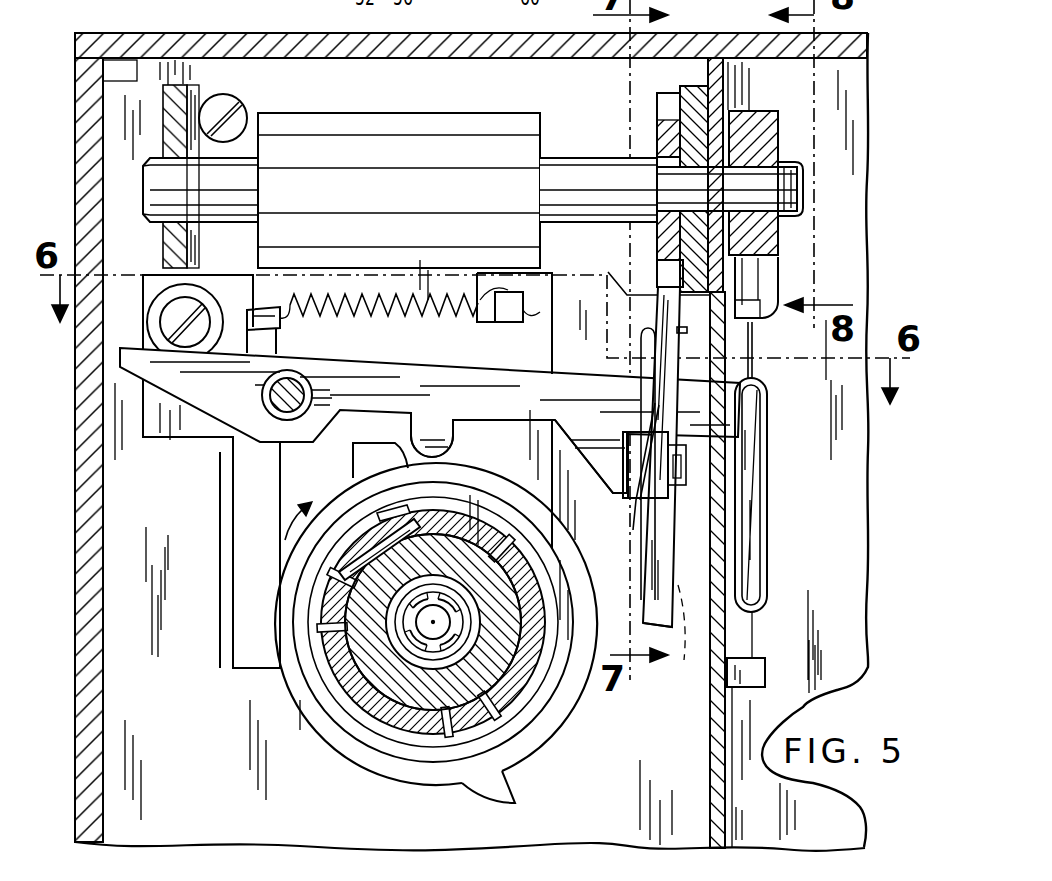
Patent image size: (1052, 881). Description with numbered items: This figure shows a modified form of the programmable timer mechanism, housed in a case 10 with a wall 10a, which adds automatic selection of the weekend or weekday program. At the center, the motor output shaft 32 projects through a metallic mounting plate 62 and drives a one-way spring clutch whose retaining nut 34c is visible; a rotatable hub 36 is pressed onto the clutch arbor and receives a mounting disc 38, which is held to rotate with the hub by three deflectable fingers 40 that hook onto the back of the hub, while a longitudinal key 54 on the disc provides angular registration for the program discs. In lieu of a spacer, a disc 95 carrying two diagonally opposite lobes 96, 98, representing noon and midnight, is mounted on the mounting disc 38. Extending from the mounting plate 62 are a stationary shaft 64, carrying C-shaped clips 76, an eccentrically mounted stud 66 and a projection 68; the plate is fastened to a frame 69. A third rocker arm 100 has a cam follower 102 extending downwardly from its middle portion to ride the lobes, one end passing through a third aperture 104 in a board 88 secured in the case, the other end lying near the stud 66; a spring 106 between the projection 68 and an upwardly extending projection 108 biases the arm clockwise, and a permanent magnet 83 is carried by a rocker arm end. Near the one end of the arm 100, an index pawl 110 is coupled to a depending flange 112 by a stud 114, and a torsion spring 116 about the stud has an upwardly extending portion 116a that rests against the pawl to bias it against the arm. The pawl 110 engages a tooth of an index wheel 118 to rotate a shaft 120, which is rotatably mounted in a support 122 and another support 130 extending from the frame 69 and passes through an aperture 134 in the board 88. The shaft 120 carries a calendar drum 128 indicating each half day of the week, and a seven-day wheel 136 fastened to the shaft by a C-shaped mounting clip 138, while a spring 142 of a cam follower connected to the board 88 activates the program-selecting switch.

The case 10 is at (113, 100).
The housing top wall 10a is at (232, 48).
The output shaft 32 is at (433, 615).
The retaining nut 34c is at (433, 656).
The hub 36 is at (375, 655).
The mounting disc 38 is at (505, 693).
The deflectable fingers 40 is at (338, 606).
The key 54 is at (405, 511).
The mounting plate 62 is at (243, 535).
The stationary shaft 64 is at (286, 414).
The eccentrically mounted stud 66 is at (170, 316).
The projection 68 is at (540, 302).
The frame 69 is at (852, 118).
The C-shaped clips 76 is at (262, 392).
The permanent magnet 83 is at (668, 632).
The board 88 is at (712, 745).
The disc 95 is at (327, 727).
The cam lobe 96 is at (765, 462).
The cam lobe 98 is at (492, 790).
The third rocker arm 100 is at (480, 380).
The cam follower 102 is at (448, 441).
The third aperture 104 is at (715, 373).
The spring 106 is at (384, 327).
The upwardly extending projection 108 is at (282, 307).
The index pawl 110 is at (660, 308).
The depending flange 112 is at (614, 488).
The stud 114 is at (684, 470).
The torsion spring 116 is at (633, 532).
The upwardly extending portion 116a is at (640, 345).
The index wheel 118 is at (662, 112).
The shaft 120 is at (143, 205).
The support 122 is at (697, 106).
The calendar drum 128 is at (332, 112).
The support 130 is at (175, 133).
The aperture 134 is at (715, 168).
The 7-day wheel 136 is at (772, 238).
The C-shaped mounting clip 138 is at (786, 172).
The spring 142 is at (764, 320).